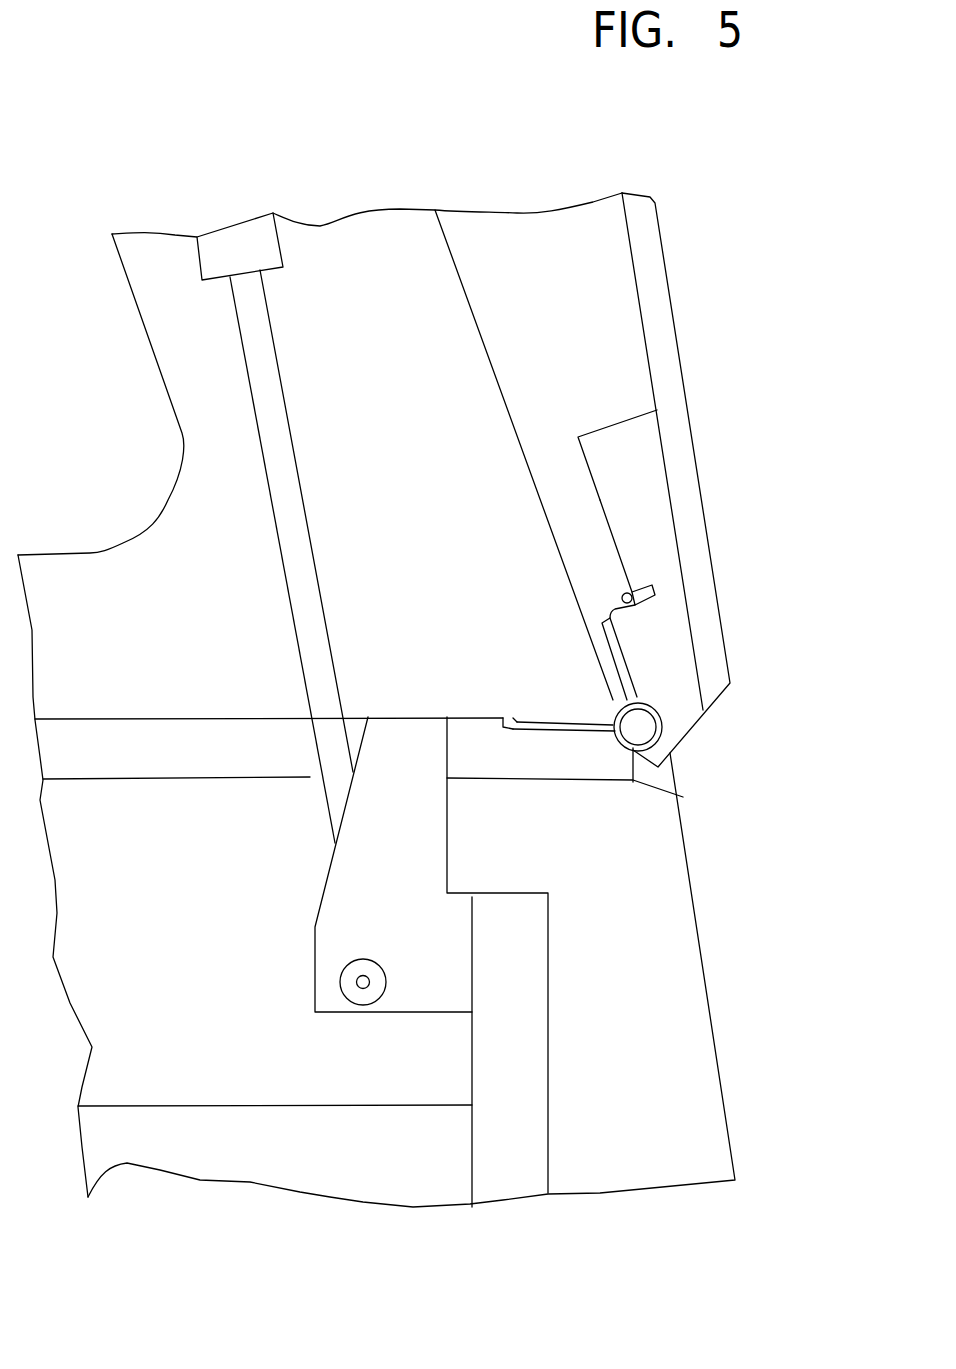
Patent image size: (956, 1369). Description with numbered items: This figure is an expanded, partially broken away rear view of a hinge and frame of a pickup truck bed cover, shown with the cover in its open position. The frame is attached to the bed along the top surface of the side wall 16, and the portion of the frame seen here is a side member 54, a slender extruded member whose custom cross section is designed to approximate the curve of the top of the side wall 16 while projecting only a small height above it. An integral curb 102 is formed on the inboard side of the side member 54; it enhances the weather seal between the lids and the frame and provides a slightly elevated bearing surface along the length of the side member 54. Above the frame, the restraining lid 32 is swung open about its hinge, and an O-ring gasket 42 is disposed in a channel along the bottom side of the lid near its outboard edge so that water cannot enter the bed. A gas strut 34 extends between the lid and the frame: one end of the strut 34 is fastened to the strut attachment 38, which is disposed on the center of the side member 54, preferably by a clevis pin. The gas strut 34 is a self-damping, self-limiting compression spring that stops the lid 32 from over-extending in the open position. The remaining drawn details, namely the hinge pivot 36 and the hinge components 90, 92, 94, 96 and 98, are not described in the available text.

The side walls 16 is at (640, 1128).
The restraining lid 32 is at (560, 265).
The gas strut 34 is at (278, 452).
The pivot 36 is at (640, 727).
The strut attachment 38 is at (364, 998).
The O-ring gasket 42 is at (615, 597).
The side member 54 is at (565, 752).
The bar 90 is at (552, 722).
The arm 92 is at (603, 648).
The notch 94 is at (508, 718).
The bracket 96 is at (612, 422).
The bracket edge 98 is at (597, 498).
The integral curb 102 is at (453, 717).